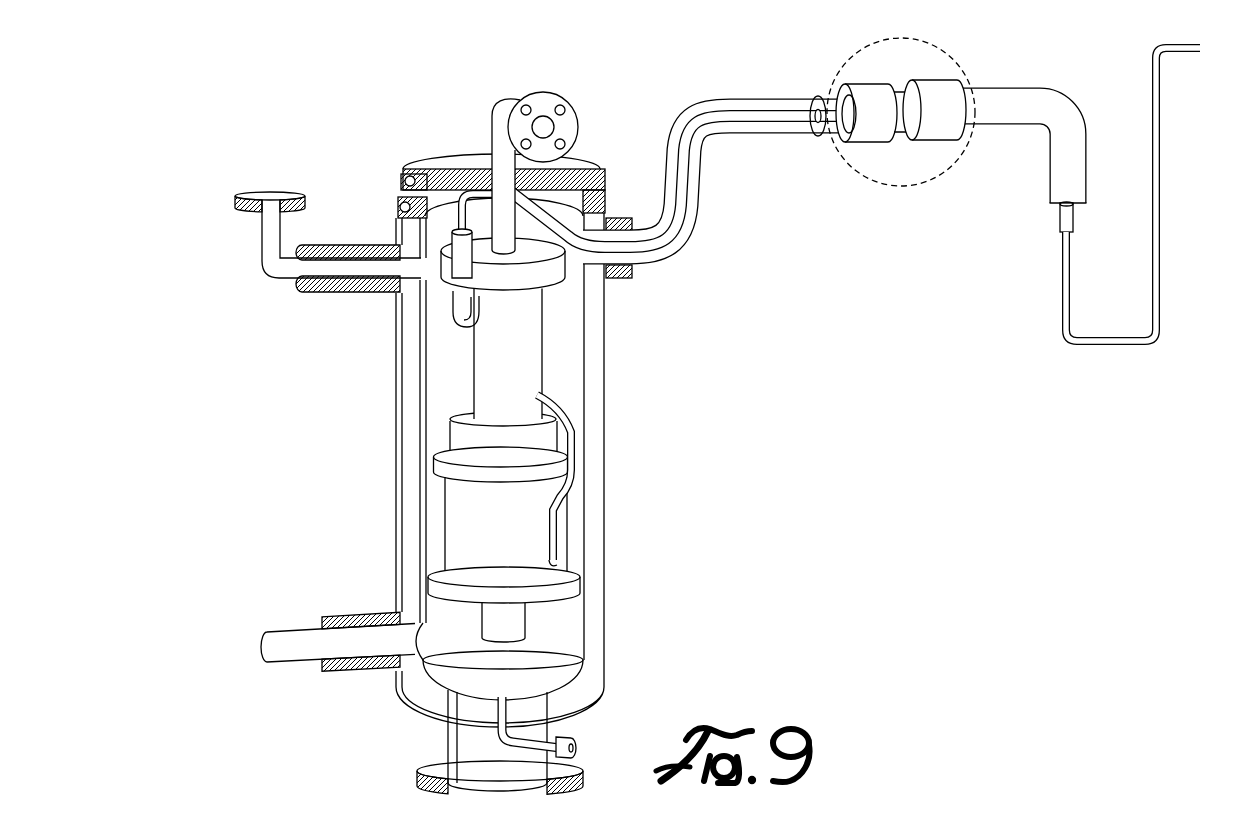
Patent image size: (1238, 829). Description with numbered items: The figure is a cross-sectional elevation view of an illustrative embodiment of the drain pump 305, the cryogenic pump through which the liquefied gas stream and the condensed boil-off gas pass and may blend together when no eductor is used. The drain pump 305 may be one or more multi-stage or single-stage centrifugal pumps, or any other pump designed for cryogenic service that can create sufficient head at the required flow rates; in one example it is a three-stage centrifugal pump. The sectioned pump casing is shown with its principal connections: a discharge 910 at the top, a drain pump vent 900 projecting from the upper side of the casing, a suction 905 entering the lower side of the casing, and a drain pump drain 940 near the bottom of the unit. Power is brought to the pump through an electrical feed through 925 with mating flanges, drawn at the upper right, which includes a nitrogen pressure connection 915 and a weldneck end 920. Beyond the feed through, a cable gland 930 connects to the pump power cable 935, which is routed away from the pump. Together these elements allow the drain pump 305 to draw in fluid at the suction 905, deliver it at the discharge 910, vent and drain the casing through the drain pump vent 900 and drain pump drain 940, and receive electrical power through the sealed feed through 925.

The drain pump 305 is at (280, 97).
The drain pump vent 900 is at (270, 190).
The suction 905 is at (268, 647).
The discharge 910 is at (573, 123).
The nitrogen pressure connection 915 is at (868, 98).
The weldneck end 920 is at (938, 92).
The electrical feed through 925 is at (887, 183).
The cable gland 930 is at (1060, 222).
The pump power cable 935 is at (1115, 345).
The drain pump drain 940 is at (580, 748).